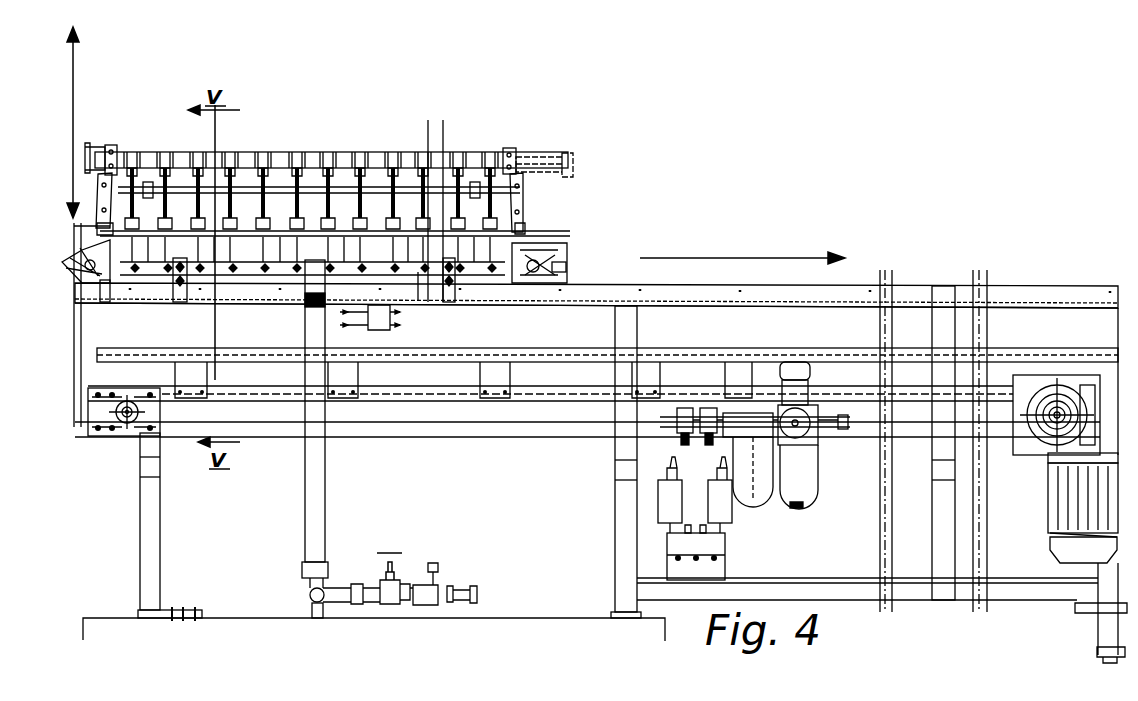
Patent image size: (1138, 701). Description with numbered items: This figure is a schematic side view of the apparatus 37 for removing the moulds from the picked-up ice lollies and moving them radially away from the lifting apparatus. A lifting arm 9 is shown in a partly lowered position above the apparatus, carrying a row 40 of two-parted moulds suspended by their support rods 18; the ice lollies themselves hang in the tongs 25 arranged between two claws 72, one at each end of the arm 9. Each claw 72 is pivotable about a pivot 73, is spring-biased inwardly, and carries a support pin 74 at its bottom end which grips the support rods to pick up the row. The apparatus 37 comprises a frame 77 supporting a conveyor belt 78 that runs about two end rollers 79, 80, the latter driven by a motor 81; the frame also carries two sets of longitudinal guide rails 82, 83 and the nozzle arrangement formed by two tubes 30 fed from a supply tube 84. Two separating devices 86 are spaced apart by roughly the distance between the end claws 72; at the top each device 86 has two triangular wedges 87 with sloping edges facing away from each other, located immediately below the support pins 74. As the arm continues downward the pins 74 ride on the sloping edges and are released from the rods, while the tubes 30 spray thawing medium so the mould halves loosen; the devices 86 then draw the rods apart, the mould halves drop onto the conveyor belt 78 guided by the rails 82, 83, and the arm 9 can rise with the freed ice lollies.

The lifting arm 9 is at (345, 162).
The support rod 18 is at (416, 199).
The tongs 25 is at (260, 190).
The tube 30 is at (411, 305).
The apparatus for removing the moulds 37 is at (856, 282).
The row of moulds 40 is at (303, 240).
The claw 72 is at (100, 192).
The pivot 73 is at (117, 166).
The support pin 74 is at (100, 231).
The frame 77 is at (141, 543).
The conveyor belt 78 is at (441, 386).
The end roller 79 is at (120, 436).
The end roller 80 is at (1062, 400).
The motor 81 is at (1062, 505).
The guide rail 82 is at (668, 305).
The guide rail 83 is at (528, 352).
The supply tube 84 is at (319, 545).
The device for removing the moulds 86 is at (102, 288).
The triangular wedge 87 is at (70, 258).